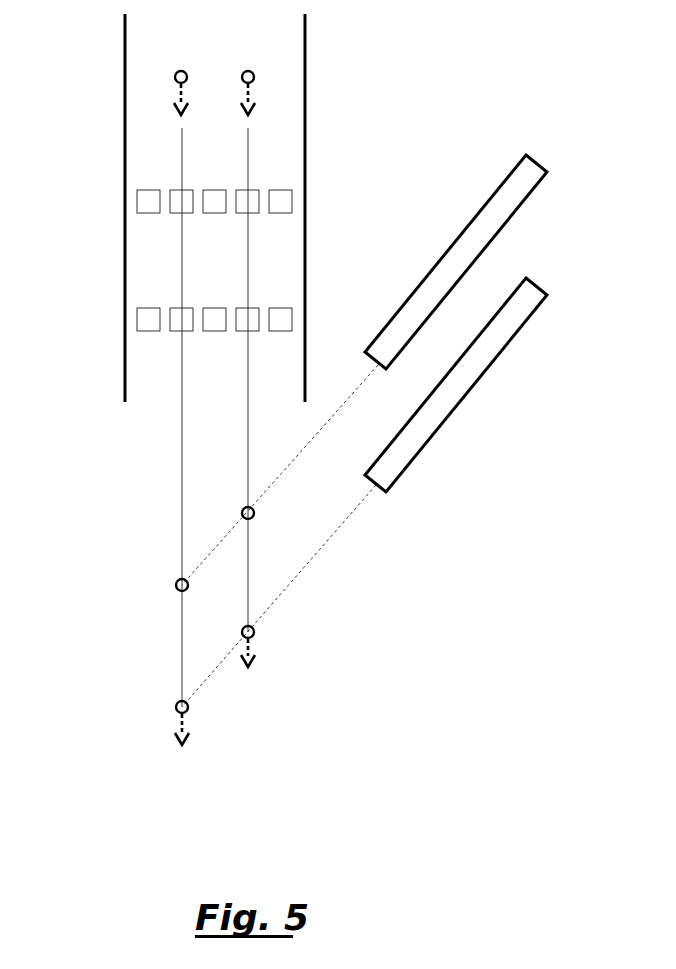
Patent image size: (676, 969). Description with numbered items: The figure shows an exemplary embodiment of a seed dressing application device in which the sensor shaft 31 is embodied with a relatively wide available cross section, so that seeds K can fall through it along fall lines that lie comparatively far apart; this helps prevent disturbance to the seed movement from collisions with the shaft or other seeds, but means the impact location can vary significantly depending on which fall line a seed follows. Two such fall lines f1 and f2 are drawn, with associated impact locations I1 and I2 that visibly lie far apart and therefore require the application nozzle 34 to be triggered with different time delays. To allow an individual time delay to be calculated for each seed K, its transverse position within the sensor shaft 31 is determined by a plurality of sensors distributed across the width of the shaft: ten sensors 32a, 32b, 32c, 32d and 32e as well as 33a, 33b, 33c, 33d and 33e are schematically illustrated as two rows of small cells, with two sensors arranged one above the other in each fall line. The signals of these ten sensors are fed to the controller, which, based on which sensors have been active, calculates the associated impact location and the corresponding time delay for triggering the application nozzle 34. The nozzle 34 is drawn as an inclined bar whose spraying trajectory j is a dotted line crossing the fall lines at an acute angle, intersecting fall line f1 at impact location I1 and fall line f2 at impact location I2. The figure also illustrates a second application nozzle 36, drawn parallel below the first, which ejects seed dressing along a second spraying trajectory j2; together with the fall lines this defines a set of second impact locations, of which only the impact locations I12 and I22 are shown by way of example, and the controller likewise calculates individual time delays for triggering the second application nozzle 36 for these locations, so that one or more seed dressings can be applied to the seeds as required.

The sensor shaft 31 is at (124, 31).
The seed K is at (181, 71).
The first fall line f1 is at (182, 524).
The second fall line f2 is at (248, 423).
The sensor 32a is at (137, 205).
The sensor 32b is at (172, 192).
The sensor 32c is at (213, 190).
The sensor 32d is at (258, 192).
The sensor 32e is at (292, 201).
The sensor 33a is at (137, 318).
The sensor 33b is at (180, 328).
The sensor 33c is at (214, 331).
The sensor 33d is at (258, 310).
The sensor 33e is at (292, 319).
The application nozzle 34 is at (497, 218).
The second application nozzle 36 is at (430, 420).
The spraying trajectory j is at (275, 475).
The second spraying trajectory j2 is at (283, 587).
The impact location I1 is at (176, 585).
The impact location I2 is at (255, 513).
The second impact location I12 is at (176, 707).
The second impact location I22 is at (254, 633).